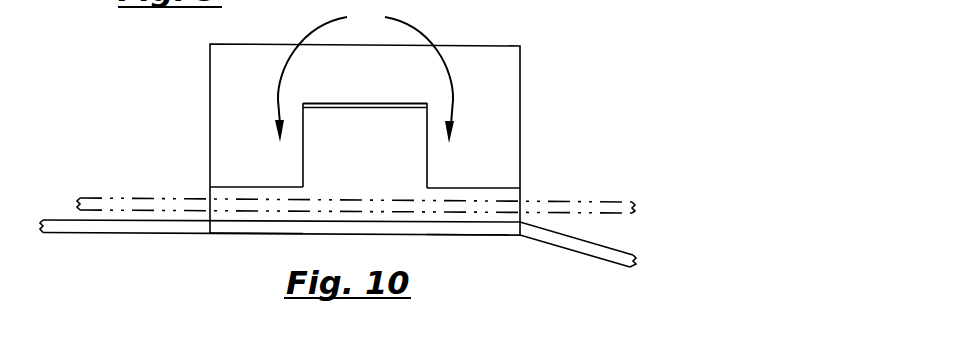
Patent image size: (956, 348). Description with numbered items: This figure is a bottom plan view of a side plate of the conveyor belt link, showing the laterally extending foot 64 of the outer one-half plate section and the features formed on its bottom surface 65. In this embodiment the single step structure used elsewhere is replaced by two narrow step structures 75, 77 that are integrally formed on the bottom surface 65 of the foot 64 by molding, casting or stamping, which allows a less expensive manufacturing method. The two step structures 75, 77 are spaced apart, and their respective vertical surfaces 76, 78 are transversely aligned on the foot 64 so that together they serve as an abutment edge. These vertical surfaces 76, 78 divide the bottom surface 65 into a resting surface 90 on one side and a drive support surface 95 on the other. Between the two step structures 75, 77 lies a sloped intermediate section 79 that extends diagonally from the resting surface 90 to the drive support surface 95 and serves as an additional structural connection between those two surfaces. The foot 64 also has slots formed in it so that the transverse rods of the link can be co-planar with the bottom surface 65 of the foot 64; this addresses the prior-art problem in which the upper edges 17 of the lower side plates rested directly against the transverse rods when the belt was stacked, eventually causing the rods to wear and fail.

The upper edges 17 is at (130, 200).
The foot 64 is at (373, 139).
The bottom surface 65 is at (495, 85).
The step structure 75 is at (237, 142).
The vertical surface 76 is at (240, 187).
The step structure 77 is at (492, 147).
The vertical surface 78 is at (477, 188).
The sloped intermediate section 79 is at (381, 163).
The resting surface 90 is at (442, 222).
The drive support surface 95 is at (364, 73).